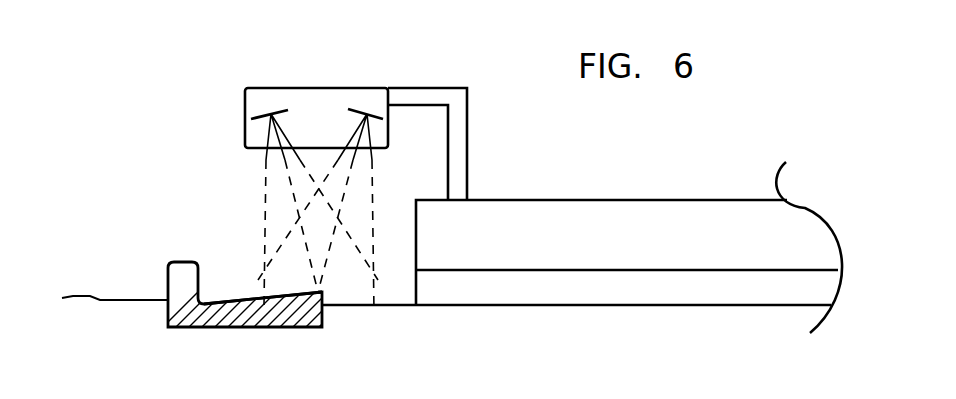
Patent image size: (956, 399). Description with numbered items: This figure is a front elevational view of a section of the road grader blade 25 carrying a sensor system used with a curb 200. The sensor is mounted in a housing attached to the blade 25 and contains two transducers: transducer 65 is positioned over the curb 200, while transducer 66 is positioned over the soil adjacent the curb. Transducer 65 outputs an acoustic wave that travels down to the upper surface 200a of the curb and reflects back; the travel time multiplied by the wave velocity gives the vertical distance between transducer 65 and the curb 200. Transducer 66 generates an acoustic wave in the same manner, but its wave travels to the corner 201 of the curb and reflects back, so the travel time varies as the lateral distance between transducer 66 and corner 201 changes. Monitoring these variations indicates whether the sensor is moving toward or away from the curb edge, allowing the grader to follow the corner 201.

The transducer 65 is at (275, 112).
The transducer 66 is at (356, 105).
The curb 200 is at (227, 328).
The surface 200a is at (288, 292).
The corner 201 is at (323, 294).
The road grader blade 25 is at (583, 288).